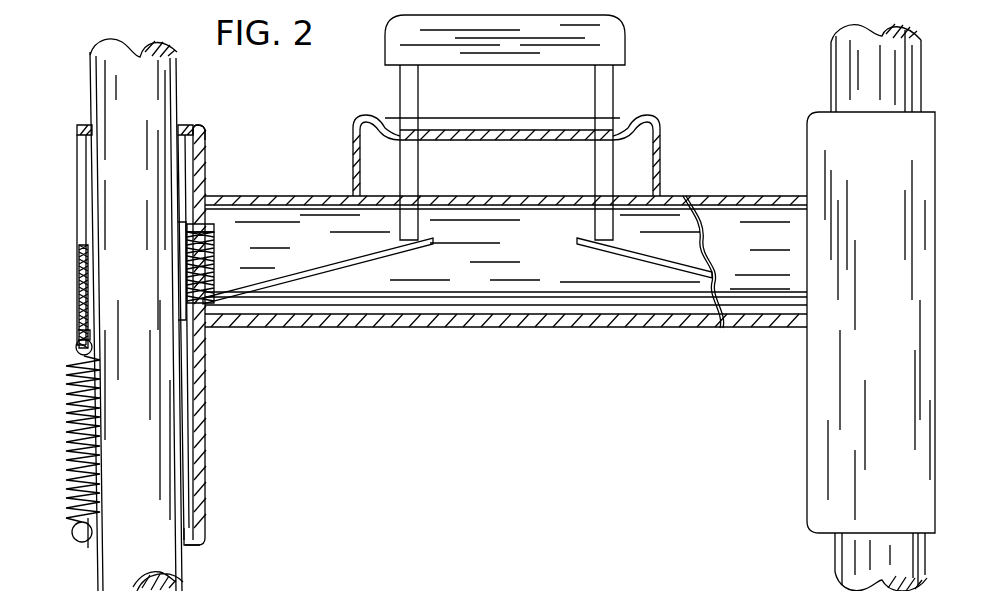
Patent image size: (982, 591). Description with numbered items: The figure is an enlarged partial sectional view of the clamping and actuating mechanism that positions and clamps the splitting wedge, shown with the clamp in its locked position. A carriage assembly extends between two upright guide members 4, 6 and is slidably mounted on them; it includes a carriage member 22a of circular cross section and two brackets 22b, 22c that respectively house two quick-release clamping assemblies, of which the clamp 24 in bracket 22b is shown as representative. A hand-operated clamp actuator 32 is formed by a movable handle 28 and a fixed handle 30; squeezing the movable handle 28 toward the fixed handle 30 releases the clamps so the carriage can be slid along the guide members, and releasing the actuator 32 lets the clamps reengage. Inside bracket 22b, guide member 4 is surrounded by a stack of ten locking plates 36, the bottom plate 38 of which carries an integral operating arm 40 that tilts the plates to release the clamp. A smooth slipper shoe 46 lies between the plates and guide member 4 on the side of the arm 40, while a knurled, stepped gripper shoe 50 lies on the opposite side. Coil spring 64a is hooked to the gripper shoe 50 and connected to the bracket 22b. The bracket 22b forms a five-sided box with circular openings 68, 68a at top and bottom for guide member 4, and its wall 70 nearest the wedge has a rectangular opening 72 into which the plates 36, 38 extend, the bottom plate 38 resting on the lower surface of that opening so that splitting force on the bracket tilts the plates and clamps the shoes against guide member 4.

The guide member 4 is at (148, 103).
The guide member 6 is at (852, 60).
The carriage member 22a is at (312, 200).
The bracket 22b is at (200, 132).
The bracket 22c is at (823, 131).
The quick-release clamping assembly 24 is at (222, 173).
The movable handle 28 is at (605, 36).
The fixed handle 30 is at (512, 137).
The hand-operated clamp actuator 32 is at (340, 138).
The locking plate 36 is at (214, 262).
The bottom plate 38 is at (78, 333).
The operating arm 40 is at (338, 268).
The slipper shoe 46 is at (185, 298).
The gripper shoe 50 is at (86, 252).
The coil spring 64a is at (70, 515).
The circular opening 68 is at (93, 133).
The circular opening 68a is at (188, 537).
The wall 70 is at (206, 368).
The rectangular opening 72 is at (212, 225).